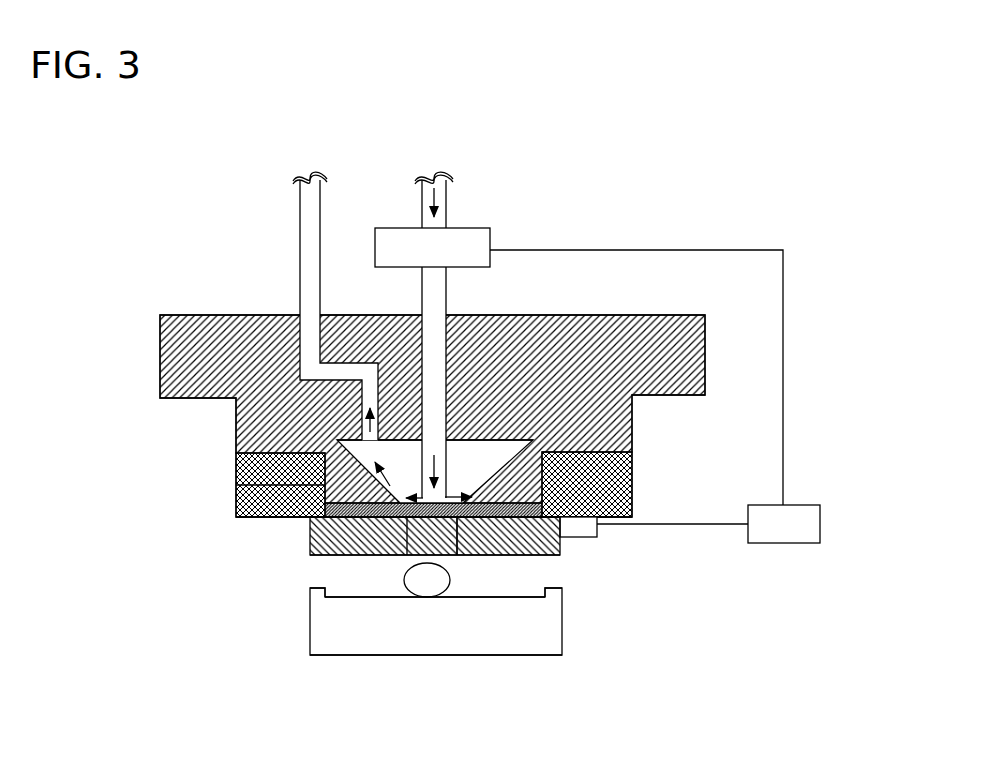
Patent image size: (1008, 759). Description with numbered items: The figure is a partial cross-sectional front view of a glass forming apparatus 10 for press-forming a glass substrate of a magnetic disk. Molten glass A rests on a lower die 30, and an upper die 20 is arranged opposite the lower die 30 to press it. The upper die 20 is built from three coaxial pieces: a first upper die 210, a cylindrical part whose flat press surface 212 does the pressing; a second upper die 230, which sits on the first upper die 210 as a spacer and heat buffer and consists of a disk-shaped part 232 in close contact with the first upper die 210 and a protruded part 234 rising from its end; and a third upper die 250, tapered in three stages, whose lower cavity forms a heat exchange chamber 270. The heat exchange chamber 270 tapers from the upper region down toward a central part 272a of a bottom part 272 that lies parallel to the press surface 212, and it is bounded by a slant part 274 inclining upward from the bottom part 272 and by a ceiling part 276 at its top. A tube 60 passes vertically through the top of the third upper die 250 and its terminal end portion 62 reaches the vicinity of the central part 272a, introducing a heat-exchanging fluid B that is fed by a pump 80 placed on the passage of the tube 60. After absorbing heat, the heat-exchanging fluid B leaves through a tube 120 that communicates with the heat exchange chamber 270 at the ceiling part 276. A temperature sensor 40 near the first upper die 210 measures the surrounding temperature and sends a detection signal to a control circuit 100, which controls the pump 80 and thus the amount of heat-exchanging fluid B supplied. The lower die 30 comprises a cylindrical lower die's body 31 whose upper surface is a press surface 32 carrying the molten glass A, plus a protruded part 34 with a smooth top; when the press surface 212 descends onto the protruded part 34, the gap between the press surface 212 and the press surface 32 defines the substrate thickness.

The glass forming apparatus 10 is at (879, 176).
The upper die 20 is at (166, 300).
The third upper die 250 is at (183, 356).
The tube for discharging heat-exchanging fluid 120 is at (300, 310).
The pump 80 is at (476, 221).
The tube for introducing heat-exchanging fluid 60 is at (447, 305).
The ceiling part 276 is at (482, 438).
The heat exchange chamber 270 is at (513, 457).
The slant part 274 is at (540, 460).
The terminal end portion 62 is at (545, 500).
The temperature sensor 40 is at (580, 524).
The control circuit 100 is at (808, 508).
The second upper die 230 is at (235, 468).
The protruded part 234 is at (235, 482).
The disk-shaped part 232 is at (235, 518).
The first upper die 210 is at (308, 545).
The press surface 212 is at (360, 558).
The bottom part 272 is at (405, 555).
The central part of bottom part 272a is at (455, 553).
The molten glass A is at (452, 592).
The heat-exchanging fluid B is at (435, 456).
The lower die 30 is at (358, 657).
The lower die's body 31 is at (530, 637).
The press surface 32 is at (522, 596).
The protruded part 34 is at (312, 592).